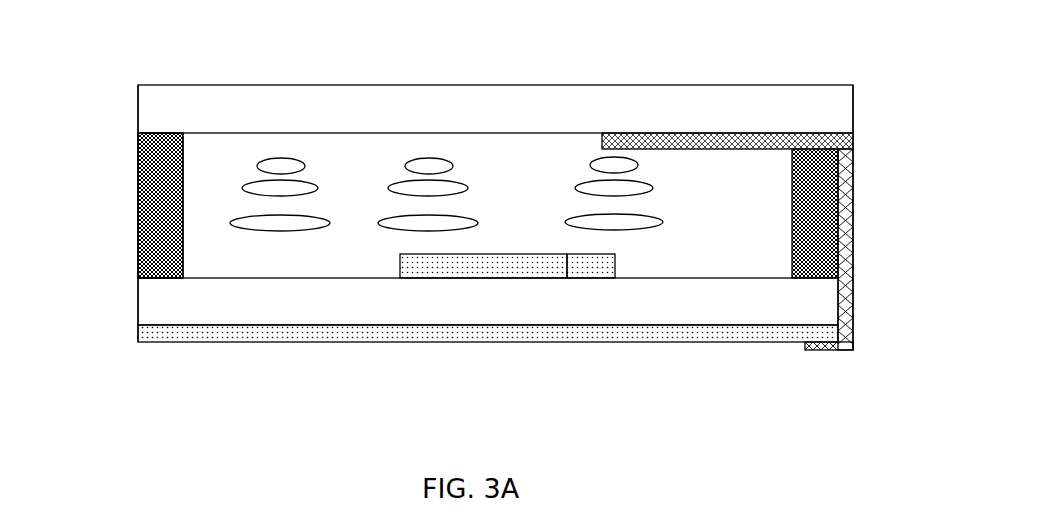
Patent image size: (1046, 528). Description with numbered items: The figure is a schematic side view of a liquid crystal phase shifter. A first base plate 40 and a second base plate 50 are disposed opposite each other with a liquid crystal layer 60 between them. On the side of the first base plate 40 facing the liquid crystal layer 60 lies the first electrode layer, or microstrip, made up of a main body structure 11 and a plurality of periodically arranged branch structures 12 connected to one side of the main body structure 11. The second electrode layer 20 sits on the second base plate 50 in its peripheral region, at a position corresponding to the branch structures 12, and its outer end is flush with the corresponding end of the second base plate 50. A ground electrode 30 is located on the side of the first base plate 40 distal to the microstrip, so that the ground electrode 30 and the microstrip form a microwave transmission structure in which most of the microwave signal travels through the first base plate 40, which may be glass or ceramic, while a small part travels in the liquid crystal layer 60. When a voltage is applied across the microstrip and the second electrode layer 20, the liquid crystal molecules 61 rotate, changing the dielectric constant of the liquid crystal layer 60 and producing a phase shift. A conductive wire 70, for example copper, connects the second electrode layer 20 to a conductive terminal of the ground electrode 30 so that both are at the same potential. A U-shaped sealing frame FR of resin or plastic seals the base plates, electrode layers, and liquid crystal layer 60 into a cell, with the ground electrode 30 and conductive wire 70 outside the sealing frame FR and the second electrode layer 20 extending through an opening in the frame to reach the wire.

The second base plate 50 is at (375, 102).
The second electrode layer 20 is at (794, 145).
The liquid crystal layer 60 is at (215, 197).
The sealing frame FR is at (168, 250).
The liquid crystal molecules 61 is at (258, 178).
The first base plate 40 is at (232, 302).
The ground electrode 30 is at (550, 332).
The conductive wire 70 is at (848, 222).
The main body structure 11 is at (453, 268).
The branch structures 12 is at (597, 268).